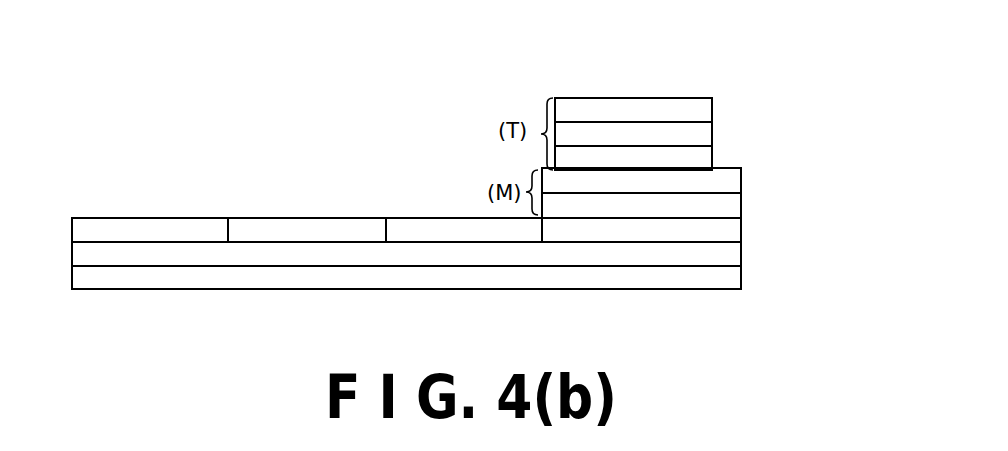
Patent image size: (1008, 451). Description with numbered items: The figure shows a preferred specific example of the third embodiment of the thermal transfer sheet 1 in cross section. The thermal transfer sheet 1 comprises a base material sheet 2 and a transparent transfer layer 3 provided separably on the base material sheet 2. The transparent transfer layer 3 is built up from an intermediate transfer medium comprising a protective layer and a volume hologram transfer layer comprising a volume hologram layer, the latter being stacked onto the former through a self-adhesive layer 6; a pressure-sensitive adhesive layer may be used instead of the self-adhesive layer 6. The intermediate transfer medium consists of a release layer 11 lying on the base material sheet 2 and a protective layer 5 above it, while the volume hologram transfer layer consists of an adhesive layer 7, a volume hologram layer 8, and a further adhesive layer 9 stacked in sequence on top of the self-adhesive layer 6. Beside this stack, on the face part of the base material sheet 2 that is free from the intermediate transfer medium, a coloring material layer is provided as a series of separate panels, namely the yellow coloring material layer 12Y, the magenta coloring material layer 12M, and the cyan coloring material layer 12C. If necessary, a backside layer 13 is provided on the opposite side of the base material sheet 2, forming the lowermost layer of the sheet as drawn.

The thermal transfer sheet 1 is at (615, 65).
The base material sheet 2 is at (729, 256).
The transparent transfer layer 3 is at (869, 95).
The protective layer 5 is at (729, 208).
The self-adhesive layer / pressure-sensitive adhesive layer 6 is at (727, 184).
The adhesive layer 7 is at (700, 158).
The volume hologram layer 8 is at (698, 135).
The adhesive layer 9 is at (702, 112).
The release layer 11 is at (729, 232).
The coloring material layer 12Y is at (142, 228).
The coloring material layer 12M is at (291, 229).
The coloring material layer 12C is at (418, 229).
The backside layer 13 is at (731, 279).